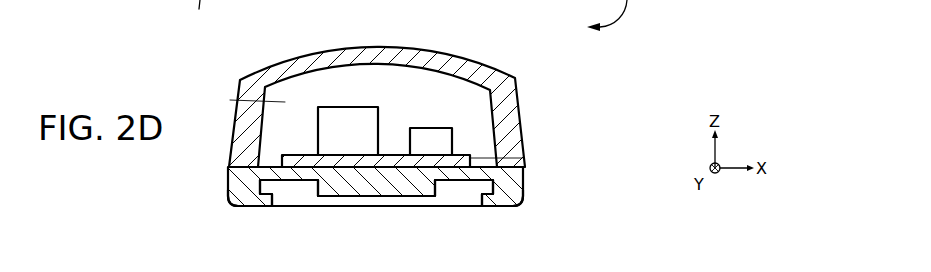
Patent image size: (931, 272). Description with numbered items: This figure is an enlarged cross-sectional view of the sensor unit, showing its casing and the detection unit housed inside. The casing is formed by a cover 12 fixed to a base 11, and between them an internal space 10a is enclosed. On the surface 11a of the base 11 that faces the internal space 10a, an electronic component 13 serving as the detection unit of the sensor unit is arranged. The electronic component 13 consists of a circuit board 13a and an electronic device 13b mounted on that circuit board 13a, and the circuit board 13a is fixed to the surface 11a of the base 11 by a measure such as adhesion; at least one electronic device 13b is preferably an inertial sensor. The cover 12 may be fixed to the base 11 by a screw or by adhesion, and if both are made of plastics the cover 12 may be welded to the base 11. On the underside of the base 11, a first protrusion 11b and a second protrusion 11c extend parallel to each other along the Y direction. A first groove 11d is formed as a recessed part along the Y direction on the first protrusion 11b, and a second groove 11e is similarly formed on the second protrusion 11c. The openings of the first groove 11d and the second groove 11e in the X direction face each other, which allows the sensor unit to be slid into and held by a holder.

The internal space 10a is at (230, 100).
The base 11 is at (497, 180).
The surface of the base 11a is at (271, 158).
The first protrusion 11b is at (248, 206).
The second protrusion 11c is at (500, 206).
The first groove 11d is at (291, 206).
The second groove 11e is at (478, 187).
The cover 12 is at (417, 49).
The electronic component 13 is at (456, 131).
The circuit board 13a is at (437, 144).
The electronic device 13b is at (363, 118).